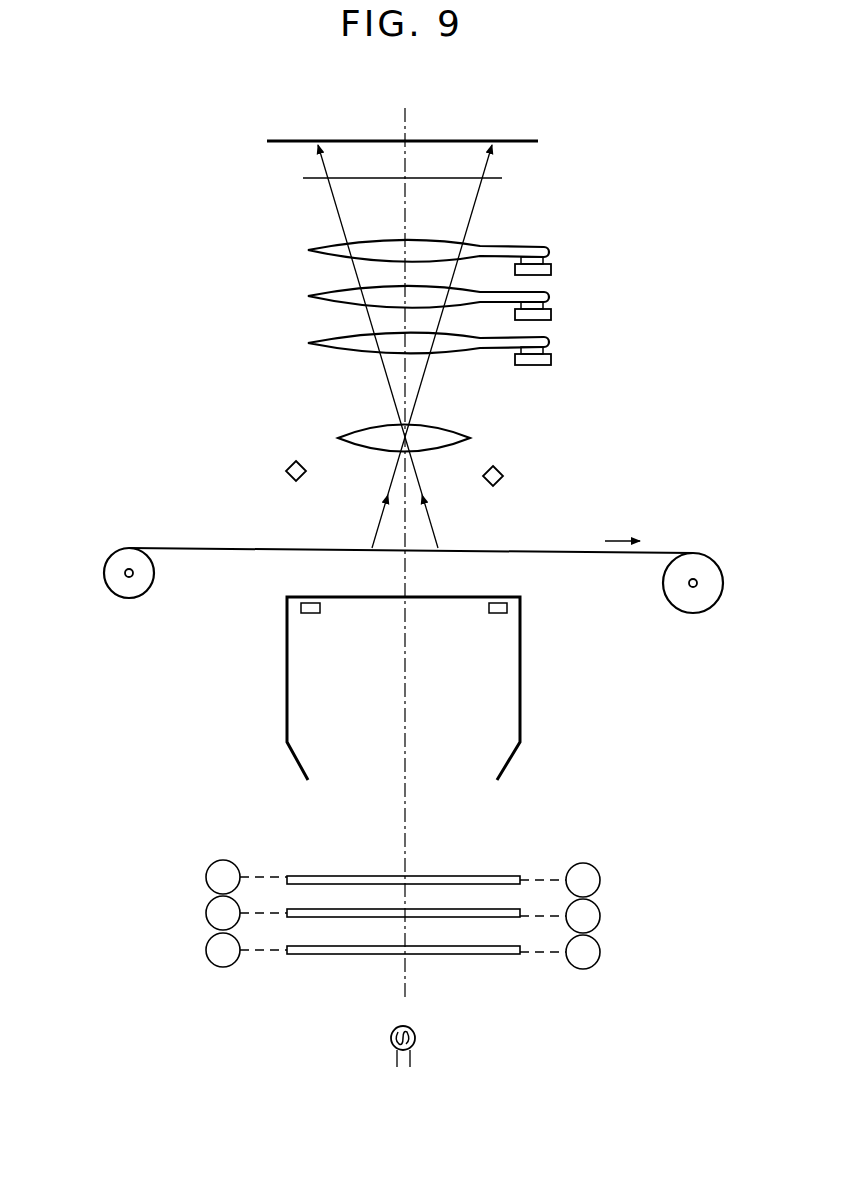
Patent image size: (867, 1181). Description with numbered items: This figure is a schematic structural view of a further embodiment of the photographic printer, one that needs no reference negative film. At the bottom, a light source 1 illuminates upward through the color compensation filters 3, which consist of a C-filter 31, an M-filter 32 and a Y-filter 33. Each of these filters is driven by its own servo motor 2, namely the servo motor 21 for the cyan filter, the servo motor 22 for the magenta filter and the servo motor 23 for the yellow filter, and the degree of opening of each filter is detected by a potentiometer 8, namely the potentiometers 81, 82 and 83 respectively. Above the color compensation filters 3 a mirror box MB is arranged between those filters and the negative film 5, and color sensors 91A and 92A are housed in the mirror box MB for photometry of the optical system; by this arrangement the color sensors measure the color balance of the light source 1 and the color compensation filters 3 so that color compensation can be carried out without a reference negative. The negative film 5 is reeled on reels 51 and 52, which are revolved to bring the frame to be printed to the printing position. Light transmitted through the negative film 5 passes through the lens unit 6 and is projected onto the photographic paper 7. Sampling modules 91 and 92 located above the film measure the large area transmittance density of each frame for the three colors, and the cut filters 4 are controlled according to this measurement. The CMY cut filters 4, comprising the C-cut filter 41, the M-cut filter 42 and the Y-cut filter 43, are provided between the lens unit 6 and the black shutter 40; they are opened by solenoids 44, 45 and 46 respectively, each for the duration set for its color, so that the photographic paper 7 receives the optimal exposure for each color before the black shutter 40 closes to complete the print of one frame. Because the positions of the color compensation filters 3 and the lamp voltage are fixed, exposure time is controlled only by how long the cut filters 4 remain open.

The photographic paper 7 is at (456, 141).
The black shutter 40 is at (500, 180).
The cut filters 4 is at (290, 285).
The Y-cut filter 43 is at (308, 250).
The M-cut filter 42 is at (308, 296).
The C-cut filter 41 is at (387, 331).
The solenoid 46 is at (551, 270).
The solenoid 45 is at (551, 315).
The solenoid 44 is at (551, 360).
The lens unit 6 is at (470, 438).
The sampling module 92 is at (291, 463).
The sampling module 91 is at (503, 474).
The negative film 5 is at (213, 548).
The reel 51 is at (120, 549).
The reel 52 is at (712, 565).
The mirror box MB is at (520, 718).
The color sensor 92A is at (301, 609).
The color sensor 91A is at (507, 609).
The potentiometer 8 is at (188, 880).
The potentiometer 83 is at (205, 870).
The potentiometer 82 is at (205, 907).
The potentiometer 81 is at (205, 945).
The color compensation filters 3 is at (430, 990).
The Y-filter 33 is at (515, 876).
The M-filter 32 is at (510, 909).
The C-filter 31 is at (510, 954).
The servo motor 2 is at (636, 958).
The servo motor 23 is at (600, 880).
The servo motor 22 is at (600, 916).
The servo motor 21 is at (600, 952).
The light source 1 is at (415, 1040).